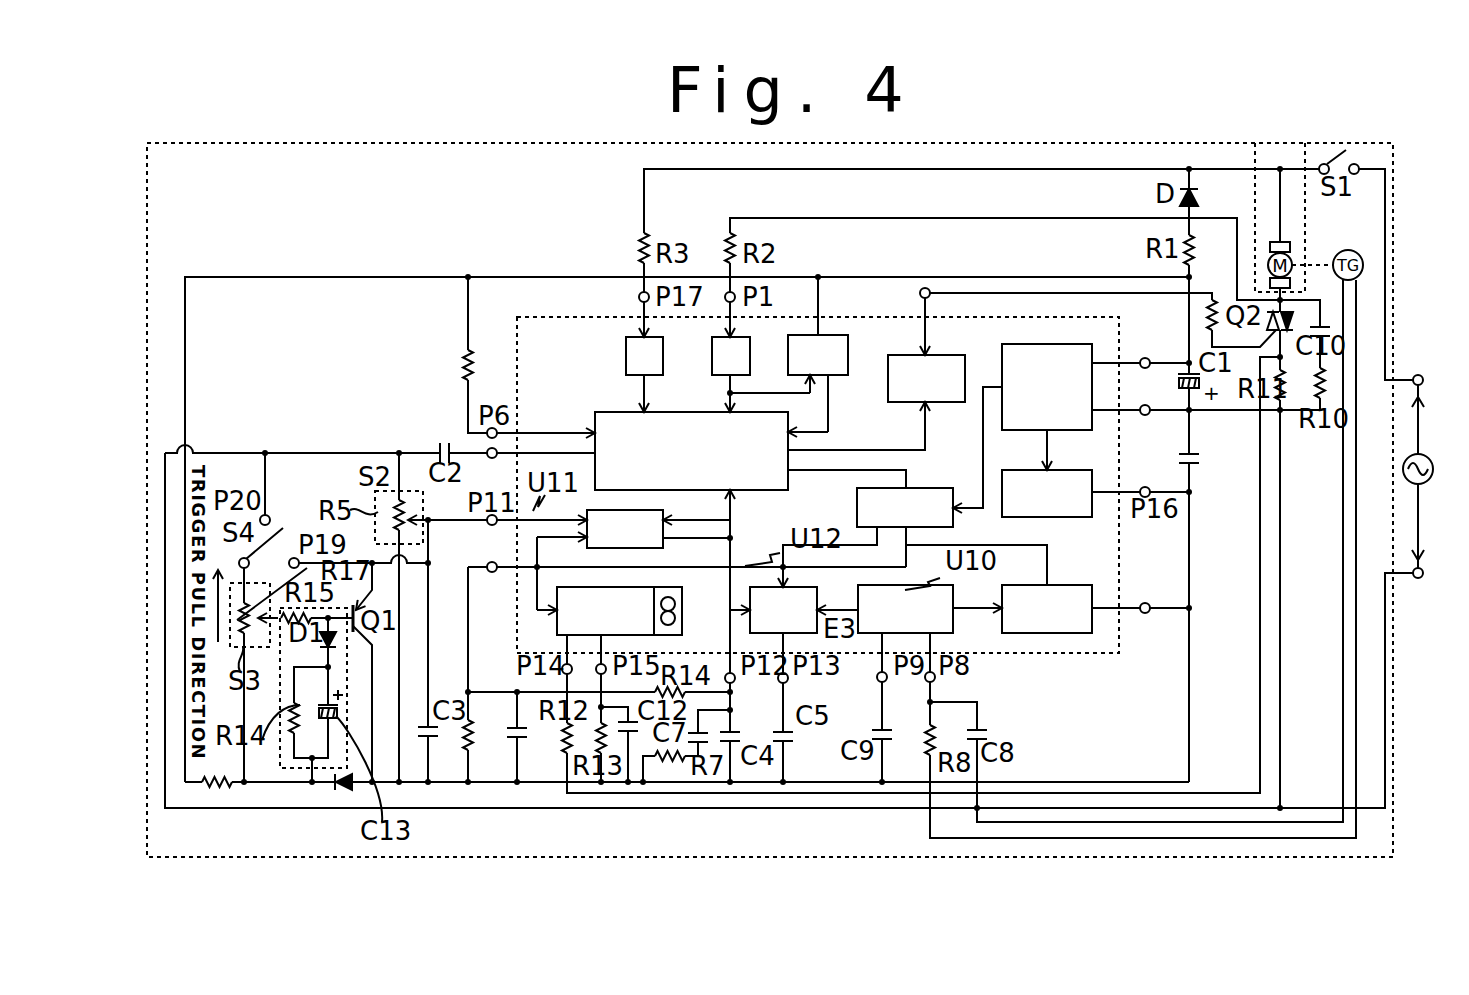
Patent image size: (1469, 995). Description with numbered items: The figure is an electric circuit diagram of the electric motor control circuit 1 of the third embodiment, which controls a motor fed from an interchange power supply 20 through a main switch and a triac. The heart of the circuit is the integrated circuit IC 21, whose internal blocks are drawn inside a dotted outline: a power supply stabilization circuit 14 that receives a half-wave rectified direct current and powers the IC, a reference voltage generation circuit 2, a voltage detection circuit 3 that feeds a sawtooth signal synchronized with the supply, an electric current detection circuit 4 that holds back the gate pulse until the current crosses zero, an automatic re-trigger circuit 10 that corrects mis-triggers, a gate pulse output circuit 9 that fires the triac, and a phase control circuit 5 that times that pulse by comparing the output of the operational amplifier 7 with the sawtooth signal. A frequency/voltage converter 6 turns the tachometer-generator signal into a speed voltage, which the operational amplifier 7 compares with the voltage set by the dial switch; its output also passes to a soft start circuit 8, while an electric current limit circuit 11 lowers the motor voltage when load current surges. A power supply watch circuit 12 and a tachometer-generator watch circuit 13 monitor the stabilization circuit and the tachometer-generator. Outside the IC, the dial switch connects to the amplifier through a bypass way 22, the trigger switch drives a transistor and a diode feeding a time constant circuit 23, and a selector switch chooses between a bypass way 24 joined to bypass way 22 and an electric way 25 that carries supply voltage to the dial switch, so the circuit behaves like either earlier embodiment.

The electric motor control circuit 1 is at (1000, 143).
The reference voltage generation circuit 2 is at (1070, 470).
The voltage detection circuit 3 is at (626, 352).
The electric current detection circuit 4 is at (712, 353).
The phase control circuit 5 is at (597, 412).
The frequency/voltage converter 6 is at (953, 590).
The operational amplifier 7 is at (600, 510).
The soft start circuit 8 is at (818, 592).
The gate pulse output circuit 9 is at (940, 355).
The automatic re-trigger circuit 10 is at (848, 352).
The electric current limit circuit 11 is at (682, 590).
The power supply watch circuit 12 is at (917, 488).
The tachometer-generator watch circuit 13 is at (1060, 585).
The power supply stabilization circuit 14 is at (1045, 344).
The interchange power supply 20 is at (1428, 482).
The integrated circuit IC 21 is at (540, 317).
The bypass way 22 is at (427, 546).
The time constant circuit 23 is at (290, 768).
The bypass way 24 is at (398, 572).
The electric way 25 is at (318, 453).